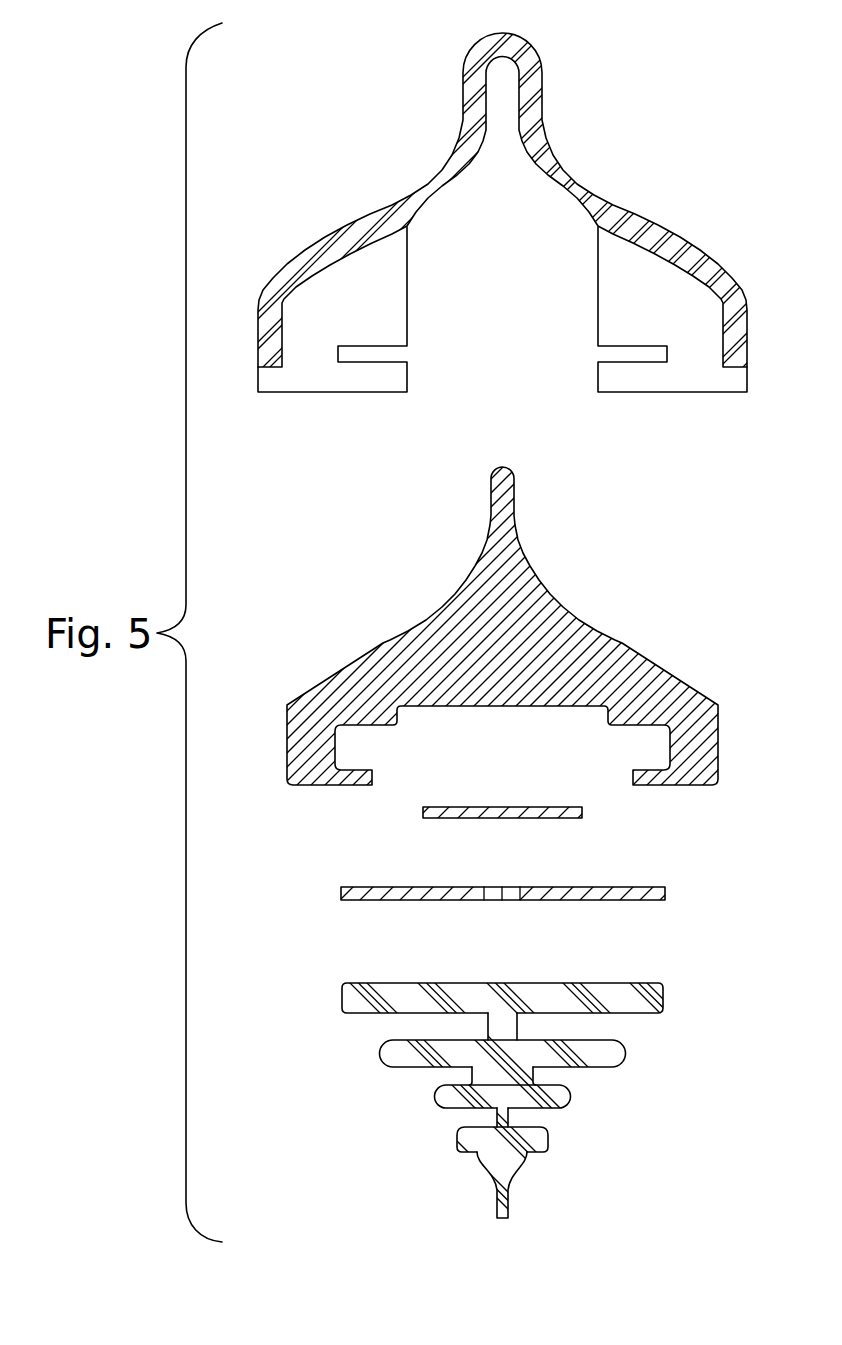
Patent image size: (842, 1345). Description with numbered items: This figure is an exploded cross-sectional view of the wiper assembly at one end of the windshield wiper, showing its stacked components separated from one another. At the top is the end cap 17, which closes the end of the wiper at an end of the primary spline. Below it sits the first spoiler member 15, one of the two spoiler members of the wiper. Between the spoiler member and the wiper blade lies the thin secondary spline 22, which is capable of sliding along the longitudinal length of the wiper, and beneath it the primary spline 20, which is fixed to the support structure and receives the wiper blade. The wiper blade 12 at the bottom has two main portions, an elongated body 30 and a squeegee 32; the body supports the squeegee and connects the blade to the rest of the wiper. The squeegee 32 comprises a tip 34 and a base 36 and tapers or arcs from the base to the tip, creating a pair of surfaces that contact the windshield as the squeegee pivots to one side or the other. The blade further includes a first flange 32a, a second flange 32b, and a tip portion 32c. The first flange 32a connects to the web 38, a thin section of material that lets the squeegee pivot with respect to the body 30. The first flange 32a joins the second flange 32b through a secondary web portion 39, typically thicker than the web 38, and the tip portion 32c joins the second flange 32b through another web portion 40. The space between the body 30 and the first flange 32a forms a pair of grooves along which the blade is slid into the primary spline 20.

The wiper blade 12 is at (546, 1082).
The first spoiler member 15 is at (550, 622).
The end cap 17 is at (538, 128).
The primary spline 20 is at (623, 890).
The secondary spline 22 is at (537, 809).
The elongated body 30 is at (540, 992).
The squeegee 32 is at (508, 1104).
The first flange 32a is at (380, 1052).
The second flange 32b is at (438, 1098).
The tip portion 32c is at (538, 1154).
The tip 34 is at (497, 1167).
The base 36 is at (317, 1084).
The web 38 is at (505, 1025).
The secondary web portion 39 is at (530, 1077).
The web portion 40 is at (503, 1117).